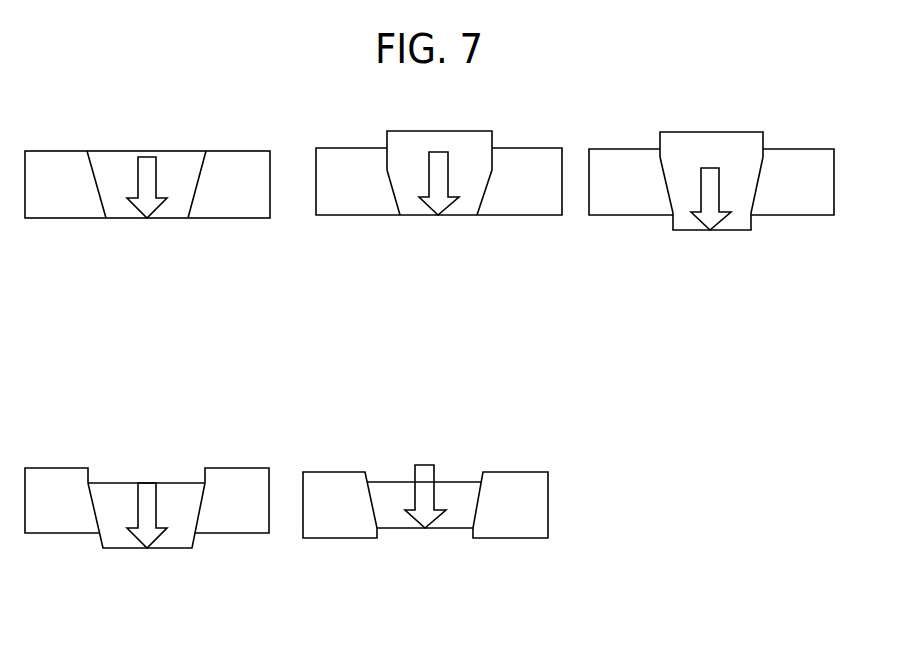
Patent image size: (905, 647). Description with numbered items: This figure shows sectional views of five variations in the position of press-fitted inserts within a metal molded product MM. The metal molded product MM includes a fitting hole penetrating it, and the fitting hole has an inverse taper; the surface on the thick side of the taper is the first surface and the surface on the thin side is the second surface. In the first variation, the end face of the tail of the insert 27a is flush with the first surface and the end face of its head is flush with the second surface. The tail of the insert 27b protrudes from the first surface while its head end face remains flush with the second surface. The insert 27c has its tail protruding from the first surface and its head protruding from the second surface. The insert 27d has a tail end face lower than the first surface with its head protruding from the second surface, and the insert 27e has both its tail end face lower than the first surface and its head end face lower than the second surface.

The metal molded product MM is at (50, 158).
The insert 27a is at (149, 220).
The insert 27b is at (438, 218).
The insert 27c is at (712, 232).
The insert 27d is at (147, 550).
The insert 27e is at (425, 530).